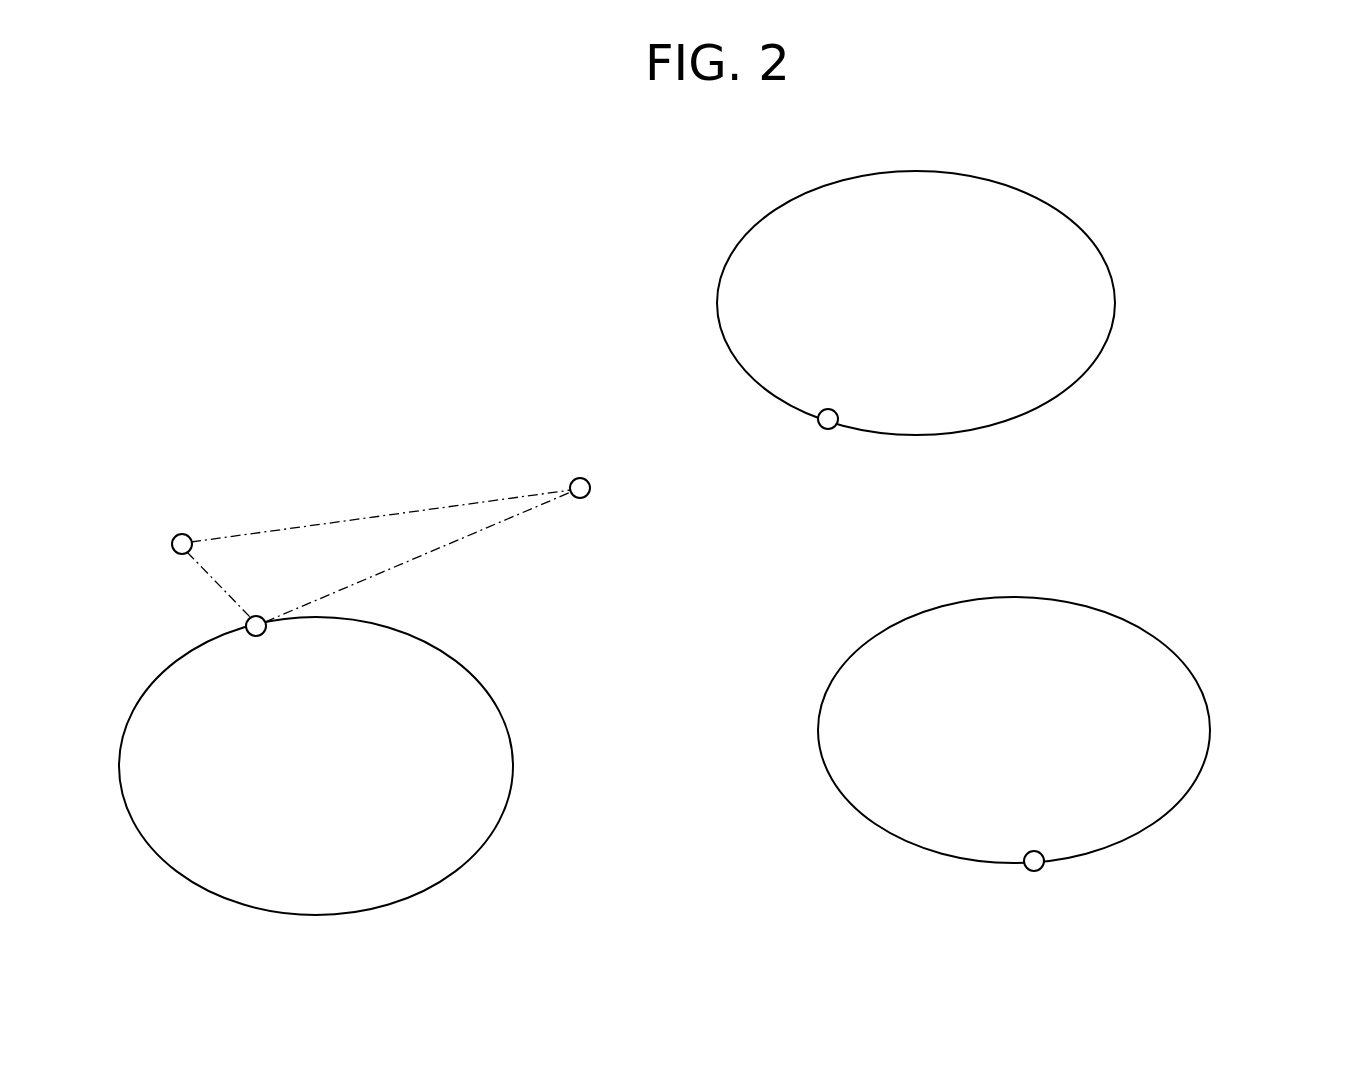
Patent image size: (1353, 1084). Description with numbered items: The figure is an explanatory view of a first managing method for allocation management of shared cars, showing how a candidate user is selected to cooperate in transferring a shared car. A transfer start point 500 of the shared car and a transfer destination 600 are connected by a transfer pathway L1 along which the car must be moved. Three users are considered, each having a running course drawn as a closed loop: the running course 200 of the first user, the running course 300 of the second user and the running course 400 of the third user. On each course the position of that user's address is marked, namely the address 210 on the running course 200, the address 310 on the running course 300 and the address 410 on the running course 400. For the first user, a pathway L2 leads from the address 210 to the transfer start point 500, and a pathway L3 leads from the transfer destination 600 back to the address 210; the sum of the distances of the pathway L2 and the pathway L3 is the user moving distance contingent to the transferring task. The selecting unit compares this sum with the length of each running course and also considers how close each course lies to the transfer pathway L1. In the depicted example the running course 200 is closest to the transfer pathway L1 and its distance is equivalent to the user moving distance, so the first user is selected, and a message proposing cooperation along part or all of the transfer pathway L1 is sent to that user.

The running course 200 is at (448, 877).
The address 210 is at (255, 637).
The running course 300 is at (1032, 412).
The address 310 is at (825, 430).
The running course 400 is at (1205, 765).
The address 410 is at (1037, 872).
The transfer start point 500 is at (182, 534).
The transfer destination 600 is at (582, 478).
The transfer pathway L1 is at (363, 520).
The pathway L2 is at (225, 593).
The pathway L3 is at (437, 550).